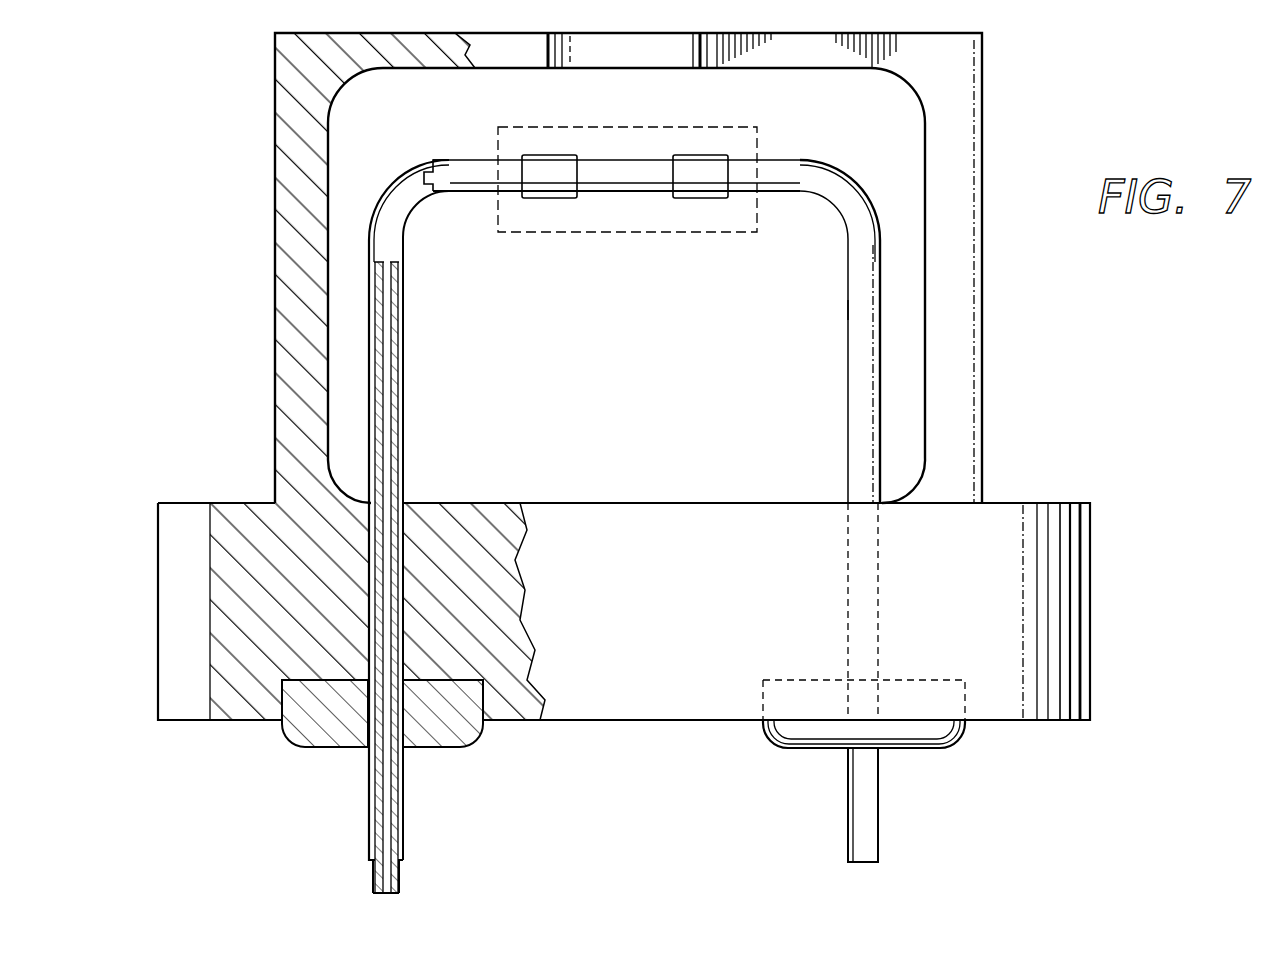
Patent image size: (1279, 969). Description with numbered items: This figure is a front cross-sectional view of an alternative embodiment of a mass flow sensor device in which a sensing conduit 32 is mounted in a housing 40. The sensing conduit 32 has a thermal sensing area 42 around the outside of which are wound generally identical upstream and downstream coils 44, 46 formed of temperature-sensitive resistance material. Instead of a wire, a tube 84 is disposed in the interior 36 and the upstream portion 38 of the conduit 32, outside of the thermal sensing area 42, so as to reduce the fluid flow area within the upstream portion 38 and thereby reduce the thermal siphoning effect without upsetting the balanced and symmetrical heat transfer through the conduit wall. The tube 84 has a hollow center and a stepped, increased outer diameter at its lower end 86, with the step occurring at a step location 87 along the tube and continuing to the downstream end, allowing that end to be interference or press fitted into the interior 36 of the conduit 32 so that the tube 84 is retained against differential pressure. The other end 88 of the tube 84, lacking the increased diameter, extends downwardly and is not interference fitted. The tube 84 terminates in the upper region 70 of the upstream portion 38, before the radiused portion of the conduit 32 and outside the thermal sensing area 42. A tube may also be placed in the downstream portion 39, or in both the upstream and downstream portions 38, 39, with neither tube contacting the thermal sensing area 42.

The sensing conduit 32 is at (853, 355).
The interior 36 is at (433, 170).
The upstream portion 38 is at (405, 310).
The downstream portion 39 is at (853, 307).
The housing 40 is at (973, 563).
The thermal sensing area 42 is at (667, 127).
The upstream coil 44 is at (547, 200).
The downstream coil 46 is at (702, 200).
The upper region 70 is at (370, 247).
The tube 84 is at (393, 437).
The lower end 86 is at (397, 820).
The step location 87 is at (377, 802).
The other end 88 is at (403, 275).